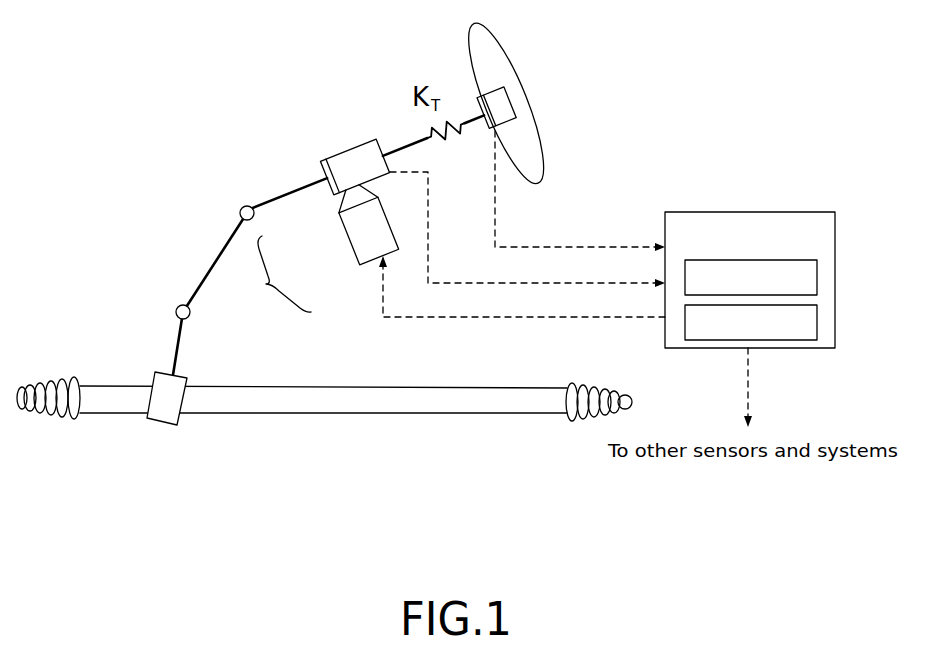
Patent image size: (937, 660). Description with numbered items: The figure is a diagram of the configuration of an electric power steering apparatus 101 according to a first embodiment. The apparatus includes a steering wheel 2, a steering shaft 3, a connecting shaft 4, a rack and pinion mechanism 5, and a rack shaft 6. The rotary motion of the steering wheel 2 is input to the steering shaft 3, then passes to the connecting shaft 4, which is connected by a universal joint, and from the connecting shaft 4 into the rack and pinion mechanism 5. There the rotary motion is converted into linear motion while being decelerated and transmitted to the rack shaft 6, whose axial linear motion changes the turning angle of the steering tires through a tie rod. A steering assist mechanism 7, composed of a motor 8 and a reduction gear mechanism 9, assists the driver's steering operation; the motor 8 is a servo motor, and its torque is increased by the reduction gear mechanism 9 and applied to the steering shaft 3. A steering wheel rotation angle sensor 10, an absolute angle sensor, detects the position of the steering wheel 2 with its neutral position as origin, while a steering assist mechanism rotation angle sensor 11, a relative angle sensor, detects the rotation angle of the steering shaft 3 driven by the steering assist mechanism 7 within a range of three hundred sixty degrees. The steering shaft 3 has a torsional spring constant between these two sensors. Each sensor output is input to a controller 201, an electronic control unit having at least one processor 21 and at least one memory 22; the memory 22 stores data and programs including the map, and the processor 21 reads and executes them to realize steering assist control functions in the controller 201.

The electric power steering apparatus 101 is at (266, 127).
The steering wheel 2 is at (532, 117).
The steering shaft 3 is at (415, 138).
The connecting shaft 4 is at (222, 247).
The rack and pinion mechanism 5 is at (177, 425).
The rack shaft 6 is at (347, 415).
The steering assist mechanism 7 is at (274, 274).
The motor 8 is at (360, 245).
The reduction gear mechanism 9 is at (330, 190).
The steering wheel rotation angle sensor 10 is at (480, 97).
The steering assist mechanism rotation angle sensor 11 is at (365, 142).
The controller 201 is at (747, 212).
The processor 21 is at (817, 275).
The memory 22 is at (817, 325).